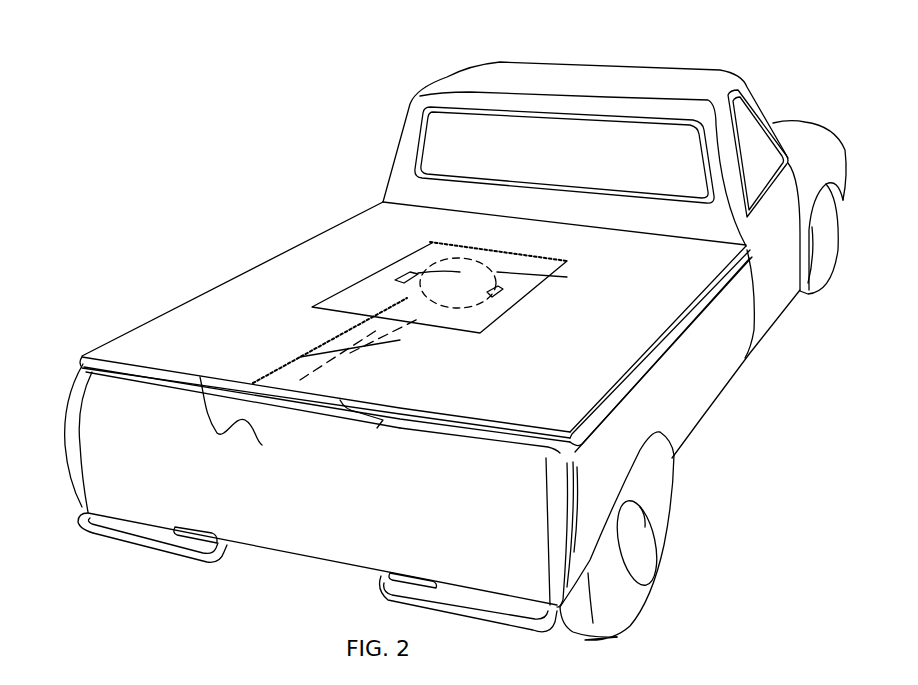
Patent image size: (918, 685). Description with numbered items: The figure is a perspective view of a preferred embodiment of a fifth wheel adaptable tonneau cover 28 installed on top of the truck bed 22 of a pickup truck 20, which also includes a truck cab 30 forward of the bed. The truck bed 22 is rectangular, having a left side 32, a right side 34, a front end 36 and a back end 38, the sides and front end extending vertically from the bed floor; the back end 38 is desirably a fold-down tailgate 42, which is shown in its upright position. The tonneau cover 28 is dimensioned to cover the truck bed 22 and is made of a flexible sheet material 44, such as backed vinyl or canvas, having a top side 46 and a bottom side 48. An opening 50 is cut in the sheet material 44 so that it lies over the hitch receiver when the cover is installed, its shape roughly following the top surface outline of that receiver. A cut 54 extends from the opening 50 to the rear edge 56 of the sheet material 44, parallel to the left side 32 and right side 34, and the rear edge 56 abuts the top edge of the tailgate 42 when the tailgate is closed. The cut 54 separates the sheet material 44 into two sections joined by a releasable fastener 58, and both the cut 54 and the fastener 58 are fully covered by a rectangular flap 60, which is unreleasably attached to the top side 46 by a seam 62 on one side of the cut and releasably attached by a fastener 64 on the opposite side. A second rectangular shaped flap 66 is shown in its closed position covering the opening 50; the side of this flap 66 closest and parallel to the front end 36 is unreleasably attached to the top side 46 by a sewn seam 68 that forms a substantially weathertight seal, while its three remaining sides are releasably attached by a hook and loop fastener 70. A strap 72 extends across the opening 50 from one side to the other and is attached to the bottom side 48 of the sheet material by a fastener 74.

The pickup truck 20 is at (425, 352).
The truck bed 22 is at (694, 445).
The tonneau cover 28 is at (474, 246).
The truck cab 30 is at (614, 178).
The left side 32 is at (286, 466).
The right side 34 is at (683, 433).
The front end 36 is at (752, 356).
The back end 38 is at (253, 533).
The fold-down tailgate 42 is at (338, 553).
The flexible sheet material 44 is at (688, 283).
The top side 46 is at (230, 285).
The bottom side 48 is at (128, 375).
The opening 50 is at (430, 302).
The cut 54 is at (360, 357).
The rear edge 56 is at (262, 445).
The releasable fastener 58 is at (433, 320).
The rectangular flap 60 is at (292, 374).
The seam 62 is at (307, 333).
The fastener 64 is at (375, 418).
The rectangular shaped flap 66 is at (565, 268).
The seam 68 is at (517, 252).
The fastener 70 is at (395, 281).
The strap 72 is at (420, 242).
The fastener 74 is at (395, 279).